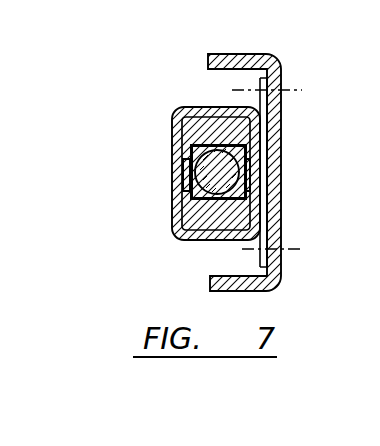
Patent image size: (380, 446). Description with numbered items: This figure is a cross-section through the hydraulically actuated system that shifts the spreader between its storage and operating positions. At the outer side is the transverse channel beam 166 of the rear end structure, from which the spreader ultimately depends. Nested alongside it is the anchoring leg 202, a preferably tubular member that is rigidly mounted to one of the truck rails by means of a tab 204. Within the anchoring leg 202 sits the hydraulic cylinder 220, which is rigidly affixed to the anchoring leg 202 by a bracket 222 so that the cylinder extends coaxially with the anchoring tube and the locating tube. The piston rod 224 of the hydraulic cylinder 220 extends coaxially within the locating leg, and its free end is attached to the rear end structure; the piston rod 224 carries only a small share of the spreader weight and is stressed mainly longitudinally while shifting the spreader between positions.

The transverse channel beam 166 is at (281, 63).
The anchoring leg 202 is at (172, 126).
The tab 204 is at (232, 90).
The hydraulic cylinder 220 is at (185, 207).
The bracket 222 is at (182, 164).
The piston rod 224 is at (238, 184).